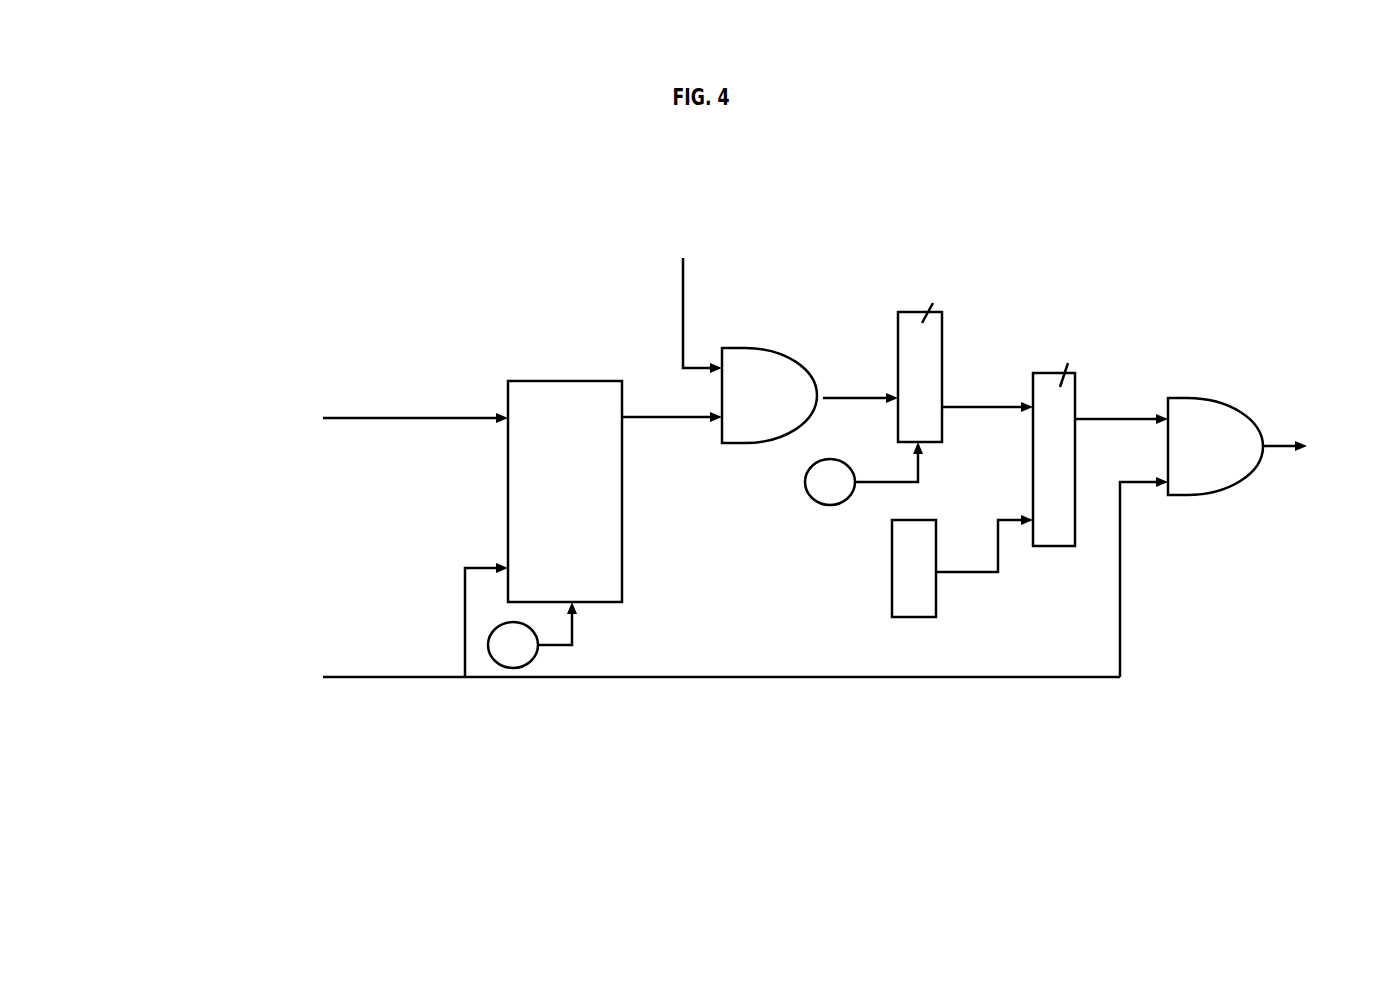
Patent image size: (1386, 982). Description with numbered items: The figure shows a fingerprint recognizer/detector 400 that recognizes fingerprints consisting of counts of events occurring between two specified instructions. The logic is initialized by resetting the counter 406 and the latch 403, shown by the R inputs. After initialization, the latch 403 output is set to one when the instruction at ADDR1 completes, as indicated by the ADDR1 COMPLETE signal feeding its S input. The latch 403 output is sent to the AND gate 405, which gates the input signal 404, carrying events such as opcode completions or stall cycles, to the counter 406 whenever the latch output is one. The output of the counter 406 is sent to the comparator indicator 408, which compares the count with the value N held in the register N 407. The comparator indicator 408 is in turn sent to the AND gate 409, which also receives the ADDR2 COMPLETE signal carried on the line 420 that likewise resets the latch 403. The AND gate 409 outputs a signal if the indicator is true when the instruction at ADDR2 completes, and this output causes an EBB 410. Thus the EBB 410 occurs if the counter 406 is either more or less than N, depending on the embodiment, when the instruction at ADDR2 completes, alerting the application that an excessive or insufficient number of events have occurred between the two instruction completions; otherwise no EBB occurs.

The fingerprint recognizer/detector 400 is at (333, 152).
The latch 403 is at (553, 510).
The input signal 404 is at (657, 284).
The AND gate 405 is at (755, 412).
The counter 406 is at (919, 392).
The register N 407 is at (941, 566).
The comparator indicator 408 is at (1101, 442).
The AND gate 409 is at (1200, 462).
The EBB 410 is at (1307, 451).
The ADDR2 complete signal line 420 is at (717, 695).